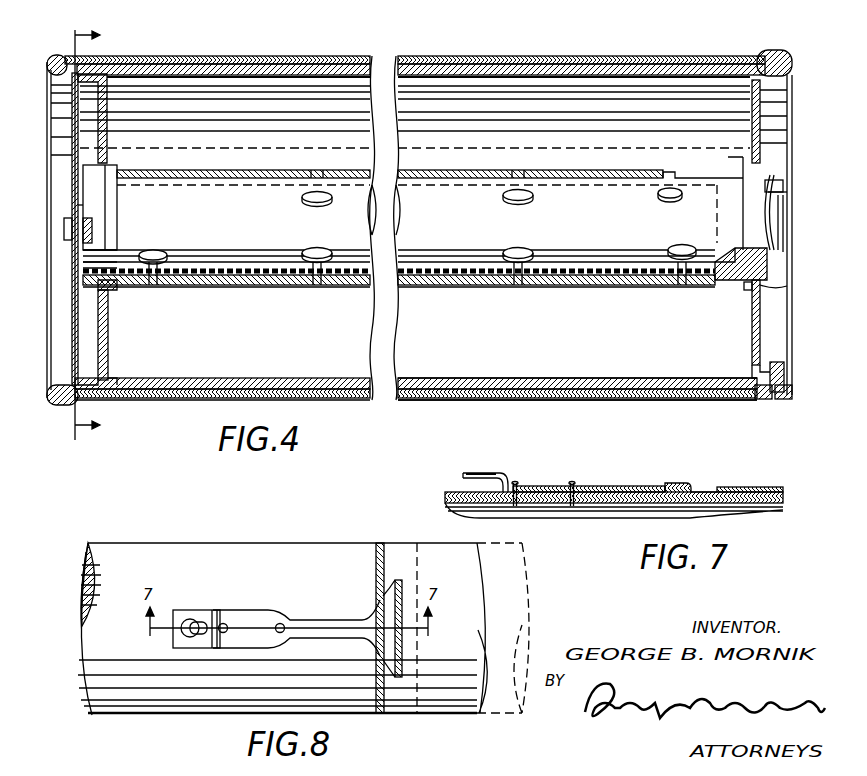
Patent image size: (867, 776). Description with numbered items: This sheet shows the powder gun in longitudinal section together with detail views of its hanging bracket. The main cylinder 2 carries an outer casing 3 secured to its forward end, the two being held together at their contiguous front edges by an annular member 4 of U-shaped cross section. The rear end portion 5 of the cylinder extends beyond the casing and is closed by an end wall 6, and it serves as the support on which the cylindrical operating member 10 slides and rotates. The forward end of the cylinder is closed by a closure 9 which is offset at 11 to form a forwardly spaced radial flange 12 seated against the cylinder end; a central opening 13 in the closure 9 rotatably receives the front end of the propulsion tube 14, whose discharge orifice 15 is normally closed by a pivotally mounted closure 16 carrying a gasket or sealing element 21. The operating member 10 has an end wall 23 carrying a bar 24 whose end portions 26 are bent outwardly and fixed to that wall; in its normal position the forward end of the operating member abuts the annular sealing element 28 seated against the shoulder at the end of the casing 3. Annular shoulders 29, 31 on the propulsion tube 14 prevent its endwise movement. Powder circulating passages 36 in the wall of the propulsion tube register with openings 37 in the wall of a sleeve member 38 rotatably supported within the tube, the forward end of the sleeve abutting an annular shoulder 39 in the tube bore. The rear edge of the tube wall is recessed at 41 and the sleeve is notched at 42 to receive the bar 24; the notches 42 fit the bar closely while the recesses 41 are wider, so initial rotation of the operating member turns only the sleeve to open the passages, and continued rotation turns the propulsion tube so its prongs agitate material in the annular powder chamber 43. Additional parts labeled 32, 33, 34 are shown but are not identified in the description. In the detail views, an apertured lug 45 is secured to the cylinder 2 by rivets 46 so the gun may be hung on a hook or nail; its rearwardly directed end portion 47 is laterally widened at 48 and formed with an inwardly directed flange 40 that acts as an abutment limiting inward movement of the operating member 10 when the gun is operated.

In FIG. 4, the main cylinder 2 is at (571, 375).
In FIG. 7, the main cylinder 2 is at (603, 510).
In FIG. 8, the main cylinder 2 is at (76, 580).
In FIG. 4, the outer casing 3 is at (517, 403).
In FIG. 7, the outer casing 3 is at (451, 488).
In FIG. 8, the outer casing 3 is at (224, 538).
In FIG. 4, the annular member 4 is at (763, 400).
In FIG. 4, the rear end portion 5 is at (135, 379).
In FIG. 7, the rear end portion 5 is at (774, 490).
In FIG. 4, the end wall 6 is at (109, 345).
In FIG. 4, the closure 9 is at (762, 312).
In FIG. 4, the operating member 10 is at (223, 54).
In FIG. 7, the operating member 10 is at (745, 485).
In FIG. 8, the operating member 10 is at (417, 539).
In FIG. 4, the offset 11 is at (783, 368).
In FIG. 4, the radial flange 12 is at (783, 400).
In FIG. 4, the opening 13 is at (776, 288).
In FIG. 4, the propulsion tube 14 is at (627, 288).
In FIG. 4, the discharge orifice 15 is at (784, 242).
In FIG. 4, the closure 16 is at (778, 210).
In FIG. 4, the gasket or sealing element 21 is at (780, 229).
In FIG. 4, the end wall 23 is at (72, 189).
In FIG. 4, the bar 24 is at (72, 215).
In FIG. 4, the end portions 26 is at (67, 242).
In FIG. 7, the annular sealing element 28 is at (668, 486).
In FIG. 8, the annular sealing element 28 is at (380, 543).
In FIG. 4, the annular shoulder 29 is at (745, 287).
In FIG. 4, the annular shoulder 31 is at (113, 186).
In FIG. 4, the end block 32 is at (768, 270).
In FIG. 4, the latch housing 33 is at (786, 178).
In FIG. 4, the latch seat 34 is at (783, 193).
In FIG. 4, the powder circulating passages 36 is at (316, 287).
In FIG. 4, the openings 37 is at (309, 202).
In FIG. 4, the sleeve member 38 is at (221, 193).
In FIG. 4, the annular shoulder 39 is at (730, 252).
In FIG. 7, the inwardly directed flange 40 is at (694, 490).
In FIG. 4, the recesses 41 is at (92, 268).
In FIG. 4, the notches 42 is at (93, 220).
In FIG. 4, the annular powder chamber 43 is at (316, 108).
In FIG. 7, the apertured lug 45 is at (505, 476).
In FIG. 8, the apertured lug 45 is at (214, 610).
In FIG. 7, the rivets 46 is at (570, 484).
In FIG. 8, the rivets 46 is at (278, 623).
In FIG. 7, the rearwardly directed end portion 47 is at (610, 486).
In FIG. 8, the rearwardly directed end portion 47 is at (321, 622).
In FIG. 7, the laterally widened portion 48 is at (684, 483).
In FIG. 8, the laterally widened portion 48 is at (398, 580).